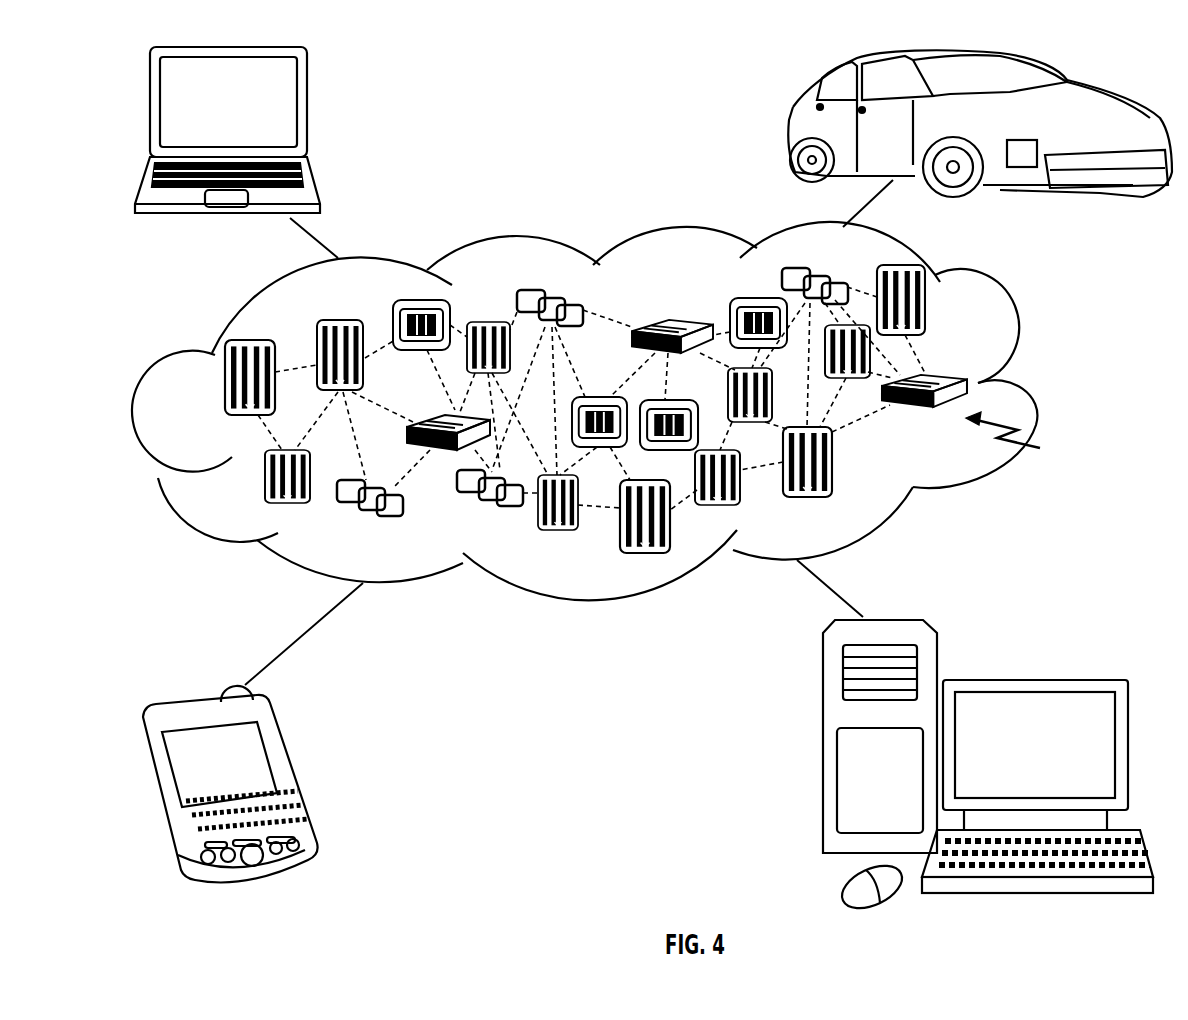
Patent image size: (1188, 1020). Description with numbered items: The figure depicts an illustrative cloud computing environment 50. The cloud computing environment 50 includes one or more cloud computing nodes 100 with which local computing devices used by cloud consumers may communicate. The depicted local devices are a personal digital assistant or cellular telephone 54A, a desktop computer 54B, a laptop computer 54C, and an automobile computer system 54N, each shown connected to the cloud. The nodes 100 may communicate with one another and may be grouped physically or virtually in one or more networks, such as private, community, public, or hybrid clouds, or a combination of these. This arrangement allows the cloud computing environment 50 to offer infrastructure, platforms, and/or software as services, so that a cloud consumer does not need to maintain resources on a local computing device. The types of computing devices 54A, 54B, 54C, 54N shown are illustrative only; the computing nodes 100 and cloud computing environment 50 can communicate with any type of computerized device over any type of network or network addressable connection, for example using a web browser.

The cloud computing environment 50 is at (1033, 387).
The cloud computing nodes 100 is at (1040, 442).
The personal digital assistant or cellular telephone 54A is at (293, 777).
The desktop computer 54B is at (1030, 680).
The laptop computer 54C is at (308, 112).
The automobile computer system 54N is at (792, 130).